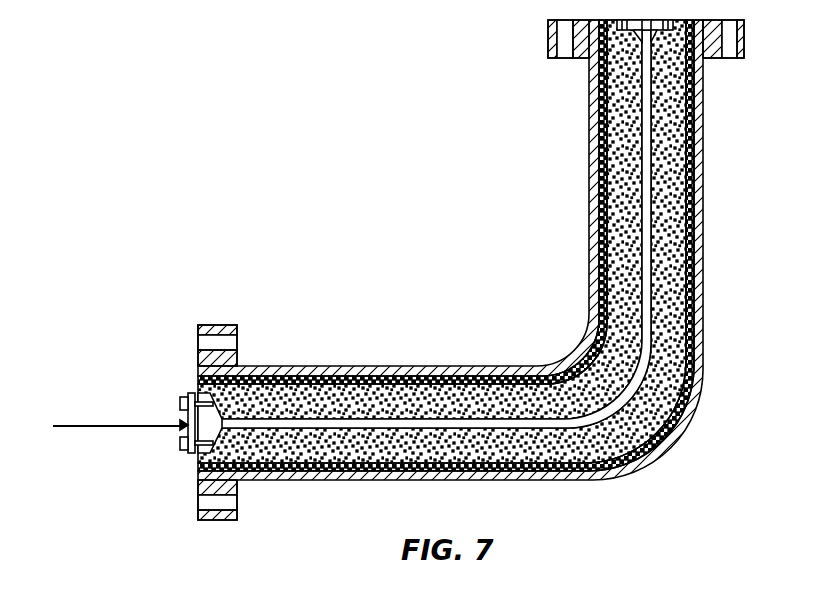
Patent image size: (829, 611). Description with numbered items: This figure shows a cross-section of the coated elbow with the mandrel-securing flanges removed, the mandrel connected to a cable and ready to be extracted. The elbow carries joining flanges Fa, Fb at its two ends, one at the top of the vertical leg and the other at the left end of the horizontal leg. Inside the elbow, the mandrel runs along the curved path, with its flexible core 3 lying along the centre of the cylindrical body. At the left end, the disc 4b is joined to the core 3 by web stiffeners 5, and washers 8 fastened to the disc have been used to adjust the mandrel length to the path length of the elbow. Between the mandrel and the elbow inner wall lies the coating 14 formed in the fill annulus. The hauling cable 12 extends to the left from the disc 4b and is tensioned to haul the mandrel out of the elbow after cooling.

The core 3 is at (358, 420).
The web stiffeners 5 is at (212, 418).
The washers 8 is at (258, 478).
The hauling cable 12 is at (105, 425).
The coating 14 is at (603, 192).
The disc 4b is at (197, 393).
The joining flange Fa is at (543, 34).
The joining flange Fb is at (217, 310).